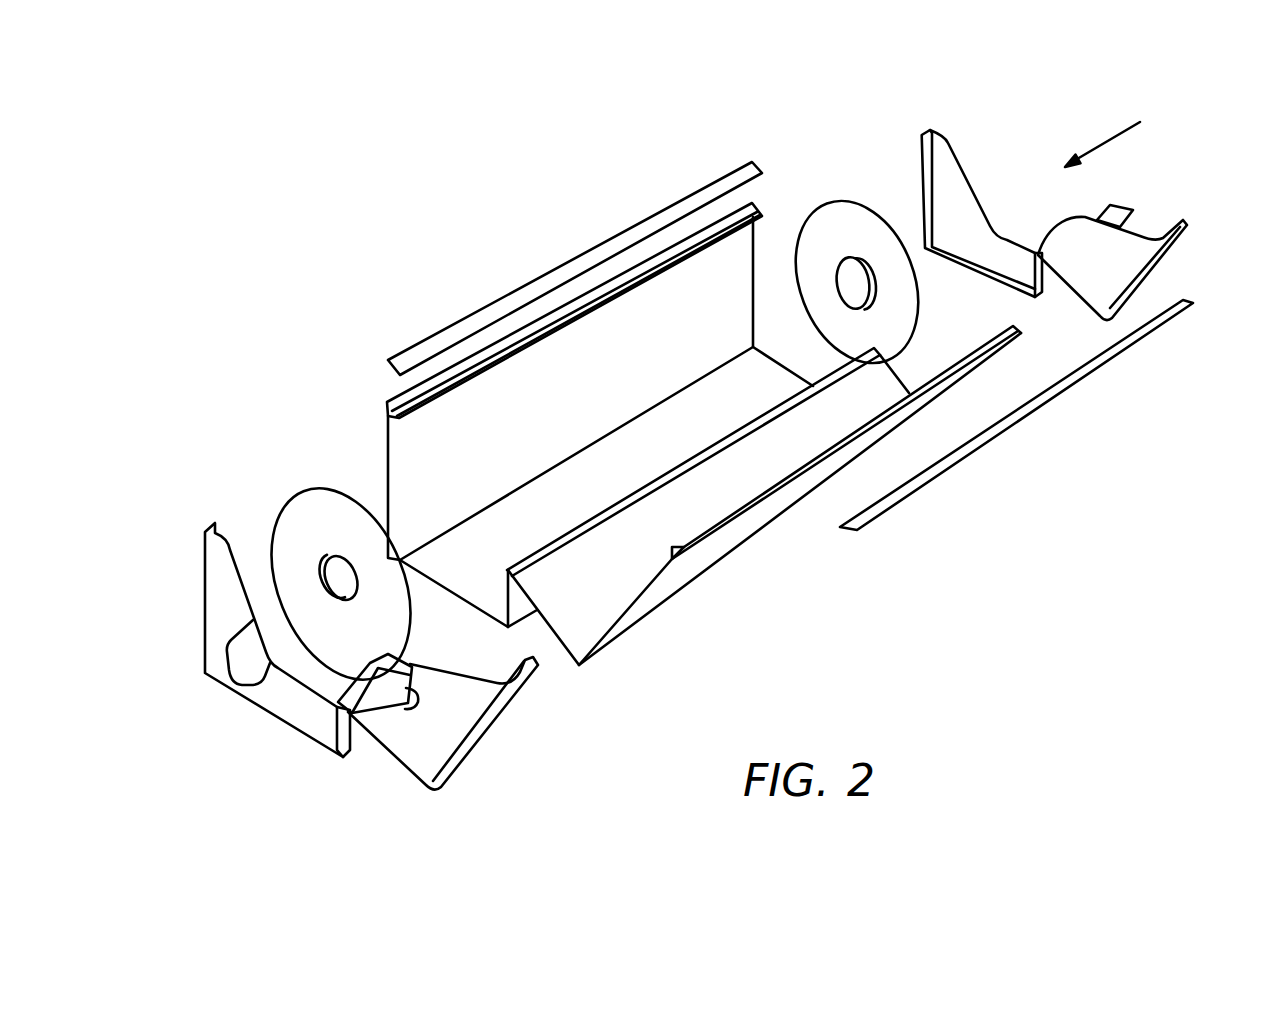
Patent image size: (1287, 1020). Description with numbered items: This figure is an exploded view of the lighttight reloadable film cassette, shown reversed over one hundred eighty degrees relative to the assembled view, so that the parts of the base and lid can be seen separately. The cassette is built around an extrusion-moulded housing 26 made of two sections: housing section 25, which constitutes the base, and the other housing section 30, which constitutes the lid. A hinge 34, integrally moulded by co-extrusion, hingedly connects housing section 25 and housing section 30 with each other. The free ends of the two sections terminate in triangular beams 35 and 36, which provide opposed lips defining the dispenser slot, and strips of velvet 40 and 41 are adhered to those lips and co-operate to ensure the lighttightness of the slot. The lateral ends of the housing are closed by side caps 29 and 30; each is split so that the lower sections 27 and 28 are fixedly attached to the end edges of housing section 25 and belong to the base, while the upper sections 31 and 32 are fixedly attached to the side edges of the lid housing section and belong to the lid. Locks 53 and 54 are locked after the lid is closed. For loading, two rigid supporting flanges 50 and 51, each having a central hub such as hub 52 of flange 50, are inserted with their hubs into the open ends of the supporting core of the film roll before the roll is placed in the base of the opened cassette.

The housing section 25 is at (427, 420).
The housing 26 is at (766, 330).
The lower section of side cap 27 is at (950, 175).
The lower section of side cap 28 is at (210, 578).
The side cap 29 is at (1091, 150).
The housing section 30 is at (702, 565).
The upper section of side cap 31 is at (1163, 270).
The upper section of side cap 32 is at (473, 747).
The hinge 34 is at (688, 456).
The triangular beam 35 is at (543, 323).
The triangular beam 36 is at (807, 467).
The strip of velvet 40 is at (665, 209).
The strip of velvet 41 is at (1017, 423).
The rigid supporting flange 50 is at (843, 222).
The rigid supporting flange 51 is at (302, 505).
The central hub 52 is at (855, 282).
The lock 53 is at (1112, 212).
The lock 54 is at (372, 700).